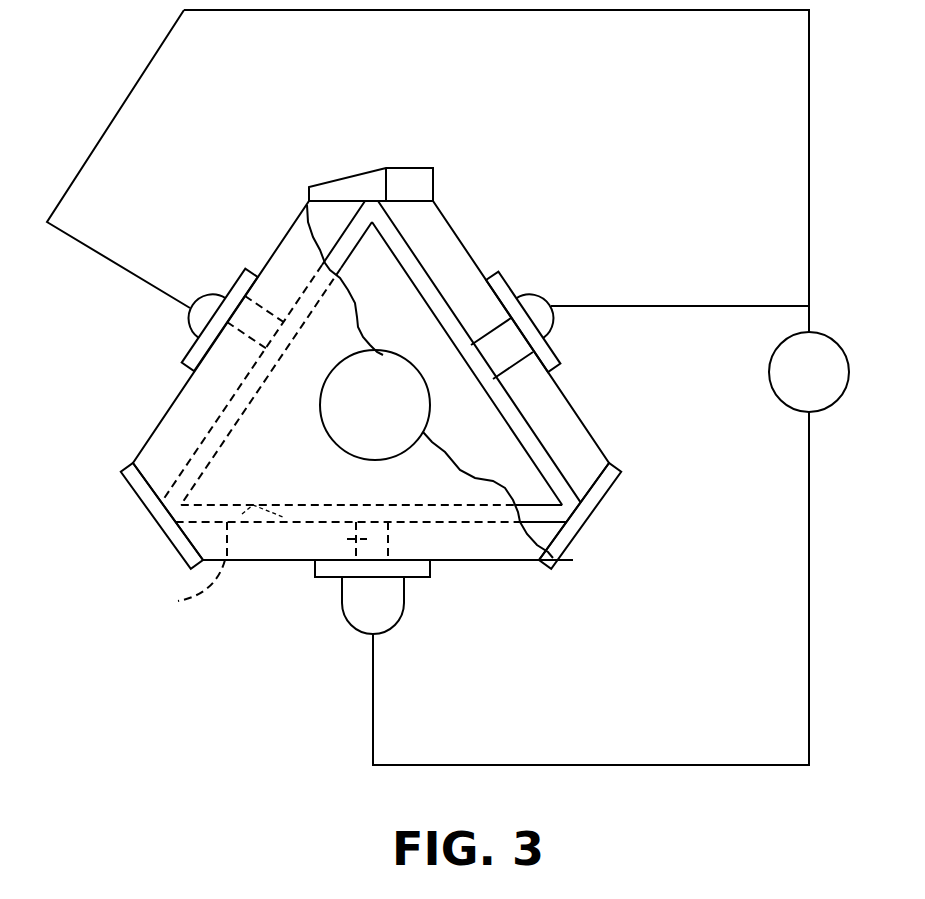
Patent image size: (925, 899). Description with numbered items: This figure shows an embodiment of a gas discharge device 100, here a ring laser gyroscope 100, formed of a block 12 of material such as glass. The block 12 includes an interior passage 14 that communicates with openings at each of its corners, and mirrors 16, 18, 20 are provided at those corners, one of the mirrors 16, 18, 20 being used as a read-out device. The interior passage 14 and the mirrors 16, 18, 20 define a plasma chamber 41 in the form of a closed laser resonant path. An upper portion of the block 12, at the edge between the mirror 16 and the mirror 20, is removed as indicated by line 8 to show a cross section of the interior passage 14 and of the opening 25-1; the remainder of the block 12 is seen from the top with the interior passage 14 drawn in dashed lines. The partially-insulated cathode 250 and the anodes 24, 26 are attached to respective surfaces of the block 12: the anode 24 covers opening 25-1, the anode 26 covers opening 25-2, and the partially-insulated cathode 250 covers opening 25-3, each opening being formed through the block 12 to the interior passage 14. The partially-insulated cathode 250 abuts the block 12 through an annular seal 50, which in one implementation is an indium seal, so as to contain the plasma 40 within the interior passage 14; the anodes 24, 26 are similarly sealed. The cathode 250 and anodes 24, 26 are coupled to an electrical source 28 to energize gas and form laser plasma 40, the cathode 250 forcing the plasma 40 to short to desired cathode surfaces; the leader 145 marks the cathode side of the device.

The gas discharge device 100 is at (623, 157).
The block 12 is at (401, 181).
The interior passage 14 is at (307, 204).
The mirror 16 is at (337, 190).
The line 8 is at (357, 323).
The anode 24 is at (520, 300).
The anode 26 is at (190, 312).
The opening 25-1 is at (503, 337).
The opening 25-2 is at (236, 283).
The opening 25-3 is at (365, 539).
The electrical source 28 is at (849, 373).
The plasma 40 is at (253, 505).
The plasma chamber 41 is at (445, 550).
The annular seal 50 is at (180, 365).
The mirror 18 is at (133, 487).
The mirror 20 is at (612, 493).
The bulb left side 145 is at (347, 625).
The partially-insulated cathode 250 is at (400, 622).